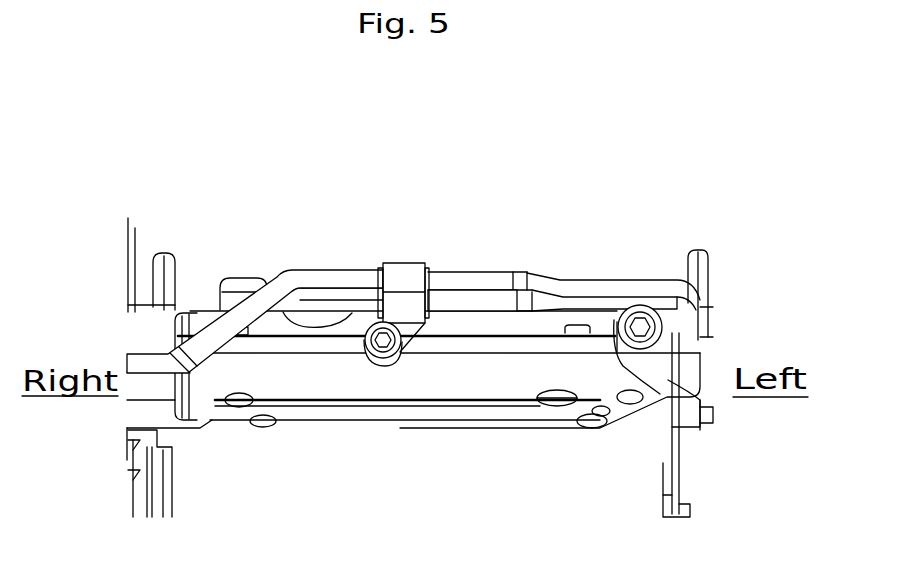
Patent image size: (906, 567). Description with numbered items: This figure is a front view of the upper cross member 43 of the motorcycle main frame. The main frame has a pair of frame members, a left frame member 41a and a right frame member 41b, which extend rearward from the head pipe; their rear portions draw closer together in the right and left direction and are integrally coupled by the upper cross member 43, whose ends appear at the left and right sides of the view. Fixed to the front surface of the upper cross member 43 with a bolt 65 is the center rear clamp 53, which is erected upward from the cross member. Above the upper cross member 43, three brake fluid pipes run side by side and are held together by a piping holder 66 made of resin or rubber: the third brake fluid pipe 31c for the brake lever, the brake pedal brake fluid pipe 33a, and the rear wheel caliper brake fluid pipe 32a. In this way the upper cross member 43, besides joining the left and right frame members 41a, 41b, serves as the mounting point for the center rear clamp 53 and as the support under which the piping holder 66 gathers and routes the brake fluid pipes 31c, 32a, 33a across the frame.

The left frame member 41a is at (709, 273).
The right frame member 41b is at (139, 264).
The center rear clamp 53 is at (408, 275).
The piping holder 66 is at (433, 277).
The third brake fluid pipe 31c is at (518, 277).
The rear wheel caliper brake fluid pipe 32a is at (440, 310).
The brake pedal brake fluid pipe 33a is at (460, 295).
The upper cross member 43 is at (330, 390).
The bolt 65 is at (395, 356).